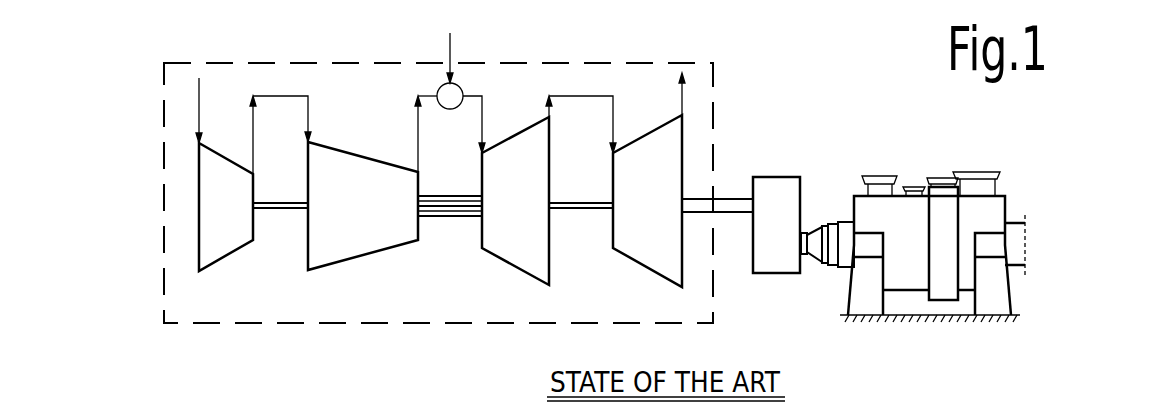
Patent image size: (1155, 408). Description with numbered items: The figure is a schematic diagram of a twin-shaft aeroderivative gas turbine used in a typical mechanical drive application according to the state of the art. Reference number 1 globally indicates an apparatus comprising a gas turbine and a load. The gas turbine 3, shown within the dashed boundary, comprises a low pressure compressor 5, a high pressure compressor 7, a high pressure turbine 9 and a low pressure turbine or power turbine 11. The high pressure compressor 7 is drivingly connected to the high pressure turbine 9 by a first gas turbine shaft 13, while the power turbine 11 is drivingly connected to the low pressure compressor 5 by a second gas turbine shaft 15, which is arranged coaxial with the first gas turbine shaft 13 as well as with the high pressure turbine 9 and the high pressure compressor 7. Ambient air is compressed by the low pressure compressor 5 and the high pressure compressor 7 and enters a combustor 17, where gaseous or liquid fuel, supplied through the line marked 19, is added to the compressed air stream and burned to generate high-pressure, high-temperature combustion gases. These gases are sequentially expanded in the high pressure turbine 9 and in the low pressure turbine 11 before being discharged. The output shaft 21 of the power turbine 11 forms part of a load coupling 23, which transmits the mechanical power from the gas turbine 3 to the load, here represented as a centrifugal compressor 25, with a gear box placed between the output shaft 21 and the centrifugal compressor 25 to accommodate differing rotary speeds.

The apparatus 1 is at (748, 151).
The gas turbine 3 is at (429, 330).
The low pressure compressor 5 is at (218, 253).
The high pressure compressor 7 is at (358, 248).
The high pressure turbine 9 is at (521, 260).
The low pressure turbine 11 is at (663, 270).
The first gas turbine shaft 13 is at (462, 213).
The second gas turbine shaft 15 is at (288, 204).
The combustor 17 is at (452, 102).
The fuel supply 19 is at (453, 52).
The output shaft 21 is at (733, 213).
The load coupling 23 is at (811, 180).
The centrifugal compressor 25 is at (988, 214).